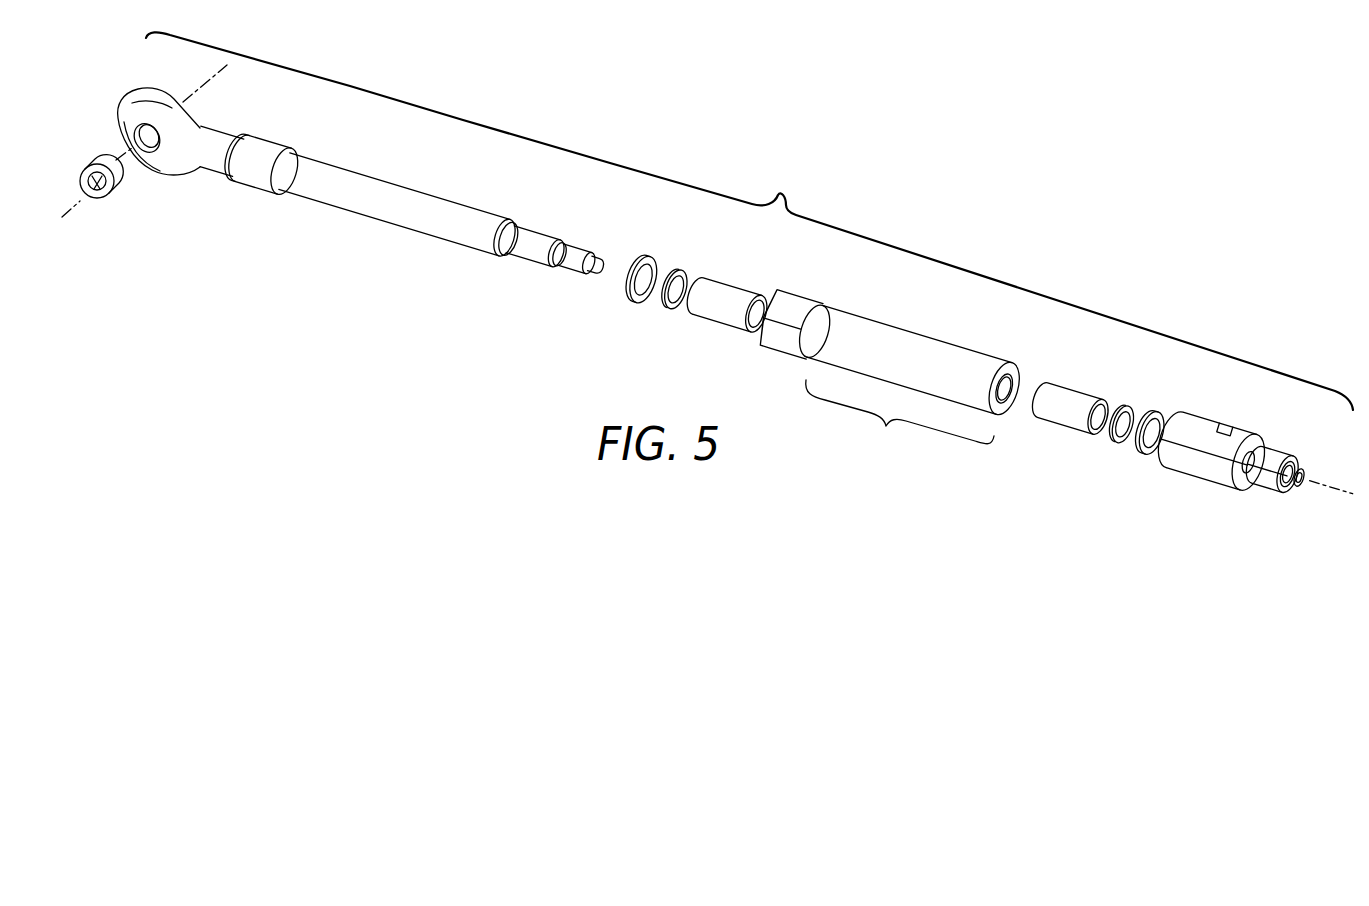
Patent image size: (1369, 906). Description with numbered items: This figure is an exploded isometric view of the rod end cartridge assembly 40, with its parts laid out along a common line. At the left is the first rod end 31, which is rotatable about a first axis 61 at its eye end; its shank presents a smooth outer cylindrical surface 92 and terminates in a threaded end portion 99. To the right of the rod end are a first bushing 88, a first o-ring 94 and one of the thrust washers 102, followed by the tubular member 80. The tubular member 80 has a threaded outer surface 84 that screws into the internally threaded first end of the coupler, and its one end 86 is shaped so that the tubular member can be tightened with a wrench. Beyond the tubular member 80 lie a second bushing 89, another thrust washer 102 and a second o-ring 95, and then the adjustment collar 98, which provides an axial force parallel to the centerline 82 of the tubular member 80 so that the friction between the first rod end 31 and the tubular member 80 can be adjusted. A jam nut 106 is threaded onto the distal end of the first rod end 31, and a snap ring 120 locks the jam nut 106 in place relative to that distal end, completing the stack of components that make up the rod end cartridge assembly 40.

The first rod end 31 is at (222, 136).
The rod end cartridge assembly 40 is at (780, 197).
The first axis 61 is at (70, 213).
The tubular member 80 is at (913, 340).
The centerline 82 is at (1353, 492).
The threaded outer surface 84 is at (890, 352).
The one end of the tubular member 86 is at (810, 297).
The bushing 88 is at (738, 293).
The bushing 89 is at (1068, 390).
The smooth outer cylindrical surface 92 is at (388, 192).
The o-ring 94 is at (642, 254).
The o-ring 95 is at (1170, 417).
The adjustment collar 98 is at (1187, 460).
The threaded end portion 99 is at (537, 233).
The thrust washers 102 is at (682, 267).
The jam nut 106 is at (1260, 480).
The snap ring 120 is at (1300, 484).